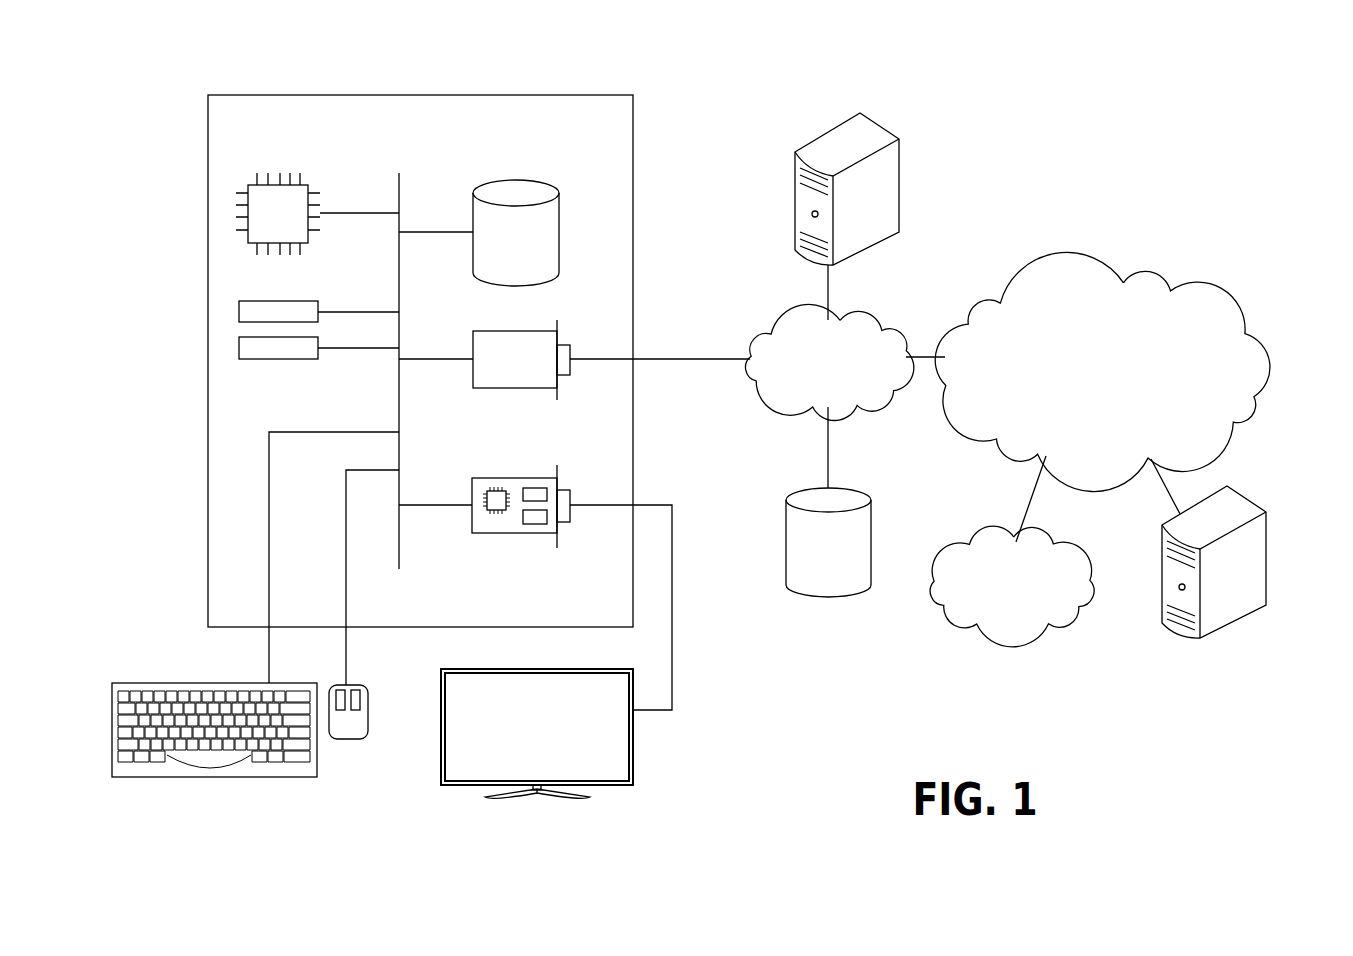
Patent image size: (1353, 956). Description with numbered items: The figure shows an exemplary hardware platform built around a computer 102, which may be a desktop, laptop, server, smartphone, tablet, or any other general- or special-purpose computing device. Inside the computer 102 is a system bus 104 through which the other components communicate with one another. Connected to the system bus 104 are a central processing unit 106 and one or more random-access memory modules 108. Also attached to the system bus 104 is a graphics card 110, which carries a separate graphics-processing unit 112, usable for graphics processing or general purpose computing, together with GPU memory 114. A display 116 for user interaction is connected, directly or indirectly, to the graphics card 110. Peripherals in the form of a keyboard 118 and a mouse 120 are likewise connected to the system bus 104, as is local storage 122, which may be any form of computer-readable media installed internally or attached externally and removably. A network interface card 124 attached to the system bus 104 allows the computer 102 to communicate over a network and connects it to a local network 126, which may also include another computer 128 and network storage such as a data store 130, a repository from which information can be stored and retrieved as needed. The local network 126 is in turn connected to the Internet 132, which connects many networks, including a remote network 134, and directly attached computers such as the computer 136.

The computer 102 is at (590, 93).
The system bus 104 is at (402, 183).
The central processing unit 106 is at (302, 178).
The random-access memory modules 108 is at (318, 340).
The graphics card 110 is at (472, 490).
The graphics-processing unit 112 is at (496, 508).
The GPU memory 114 is at (533, 523).
The display 116 is at (634, 766).
The keyboard 118 is at (218, 778).
The mouse 120 is at (347, 740).
The local storage 122 is at (561, 215).
The network interface card 124 is at (472, 343).
The local network 126 is at (883, 318).
The computer 128 is at (883, 123).
The data store 130 is at (861, 495).
The Internet 132 is at (1150, 278).
The remote network 134 is at (1067, 540).
The computer 136 is at (1243, 493).